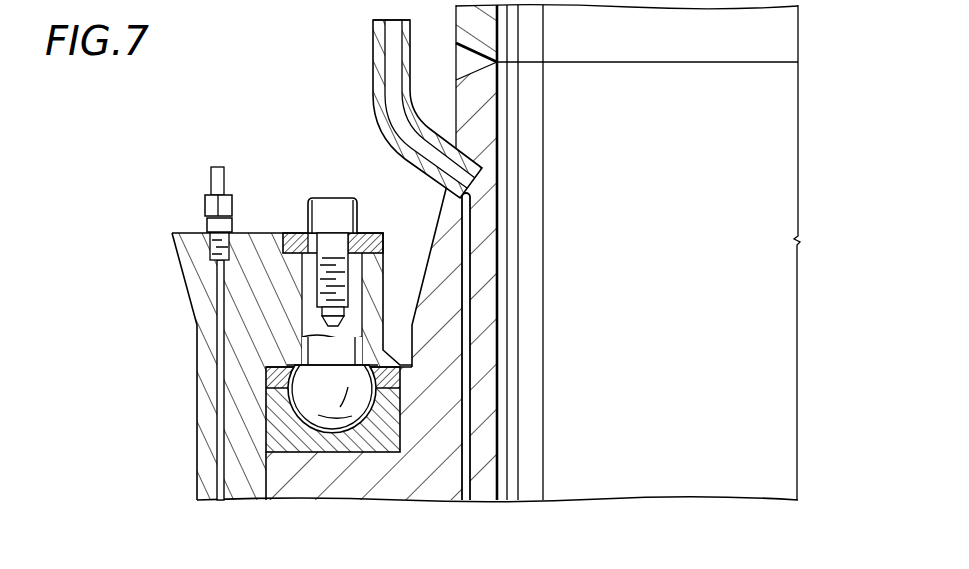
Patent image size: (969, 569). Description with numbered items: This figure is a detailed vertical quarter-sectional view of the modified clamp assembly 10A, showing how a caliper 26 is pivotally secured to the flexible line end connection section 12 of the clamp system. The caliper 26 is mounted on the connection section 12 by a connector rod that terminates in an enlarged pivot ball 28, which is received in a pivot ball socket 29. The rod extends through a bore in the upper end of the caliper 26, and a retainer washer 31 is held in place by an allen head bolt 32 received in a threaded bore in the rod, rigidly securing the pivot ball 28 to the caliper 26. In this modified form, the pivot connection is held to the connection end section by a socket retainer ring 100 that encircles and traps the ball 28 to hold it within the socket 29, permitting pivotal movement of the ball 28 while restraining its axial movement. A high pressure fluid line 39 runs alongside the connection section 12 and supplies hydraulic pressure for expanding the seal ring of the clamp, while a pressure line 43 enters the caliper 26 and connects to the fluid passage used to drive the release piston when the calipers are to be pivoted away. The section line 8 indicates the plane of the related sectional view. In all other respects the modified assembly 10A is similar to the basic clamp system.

The high pressure fluid line 39 is at (373, 43).
The pressure line 43 is at (211, 178).
The retainer washer 31 is at (297, 233).
The allen head bolt 32 is at (337, 262).
The caliper 26 is at (196, 318).
The socket retainer ring 100 is at (452, 428).
The pivot ball 28 is at (348, 410).
The pivot ball socket 29 is at (289, 444).
The flexible line end connection section 12 is at (693, 408).
The section line 8- 8 is at (123, 365).
The modified clamp assembly 10A is at (340, 354).